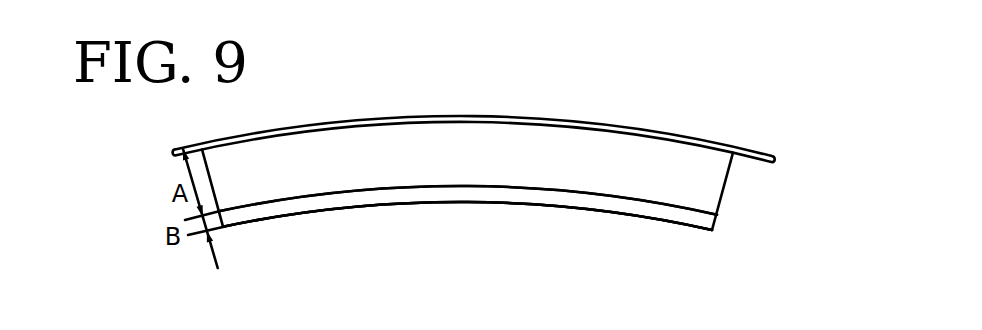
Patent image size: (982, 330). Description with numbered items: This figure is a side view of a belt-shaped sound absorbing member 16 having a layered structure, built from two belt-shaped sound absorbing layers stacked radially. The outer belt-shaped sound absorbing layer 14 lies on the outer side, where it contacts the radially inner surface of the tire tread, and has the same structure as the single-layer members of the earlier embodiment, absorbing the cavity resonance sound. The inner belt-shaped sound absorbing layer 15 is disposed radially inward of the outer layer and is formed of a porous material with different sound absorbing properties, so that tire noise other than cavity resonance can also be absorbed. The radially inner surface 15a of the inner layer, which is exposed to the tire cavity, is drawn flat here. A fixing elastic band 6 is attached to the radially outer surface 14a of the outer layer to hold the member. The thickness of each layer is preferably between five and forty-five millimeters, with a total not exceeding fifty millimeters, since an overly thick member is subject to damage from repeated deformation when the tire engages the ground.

The fixing elastic band 6 is at (182, 145).
The outer belt-shaped sound absorbing layer 14 is at (727, 192).
The radially outer surface 14a is at (681, 208).
The inner belt-shaped sound absorbing layer 15 is at (527, 207).
The radially inner surface 15a is at (458, 206).
The belt-shaped sound absorbing member 16 is at (318, 216).